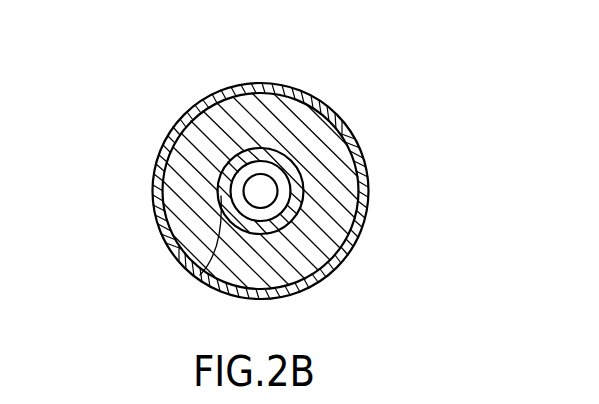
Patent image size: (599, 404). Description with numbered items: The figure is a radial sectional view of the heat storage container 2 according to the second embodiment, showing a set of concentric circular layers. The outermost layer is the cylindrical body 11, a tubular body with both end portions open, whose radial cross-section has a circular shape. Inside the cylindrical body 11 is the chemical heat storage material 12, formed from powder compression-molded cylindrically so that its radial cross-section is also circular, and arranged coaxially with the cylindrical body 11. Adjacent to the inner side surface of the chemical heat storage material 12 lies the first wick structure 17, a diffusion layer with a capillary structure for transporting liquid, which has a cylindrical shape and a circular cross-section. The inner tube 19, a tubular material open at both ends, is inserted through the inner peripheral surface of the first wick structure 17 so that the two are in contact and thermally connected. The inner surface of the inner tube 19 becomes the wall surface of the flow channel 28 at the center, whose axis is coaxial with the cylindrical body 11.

The heat storage container 2 is at (163, 136).
The cylindrical body 11 is at (292, 88).
The chemical heat storage material 12 is at (232, 127).
The first wick structure 17 is at (289, 170).
The inner tube 19 is at (250, 197).
The flow channel 28 is at (200, 276).